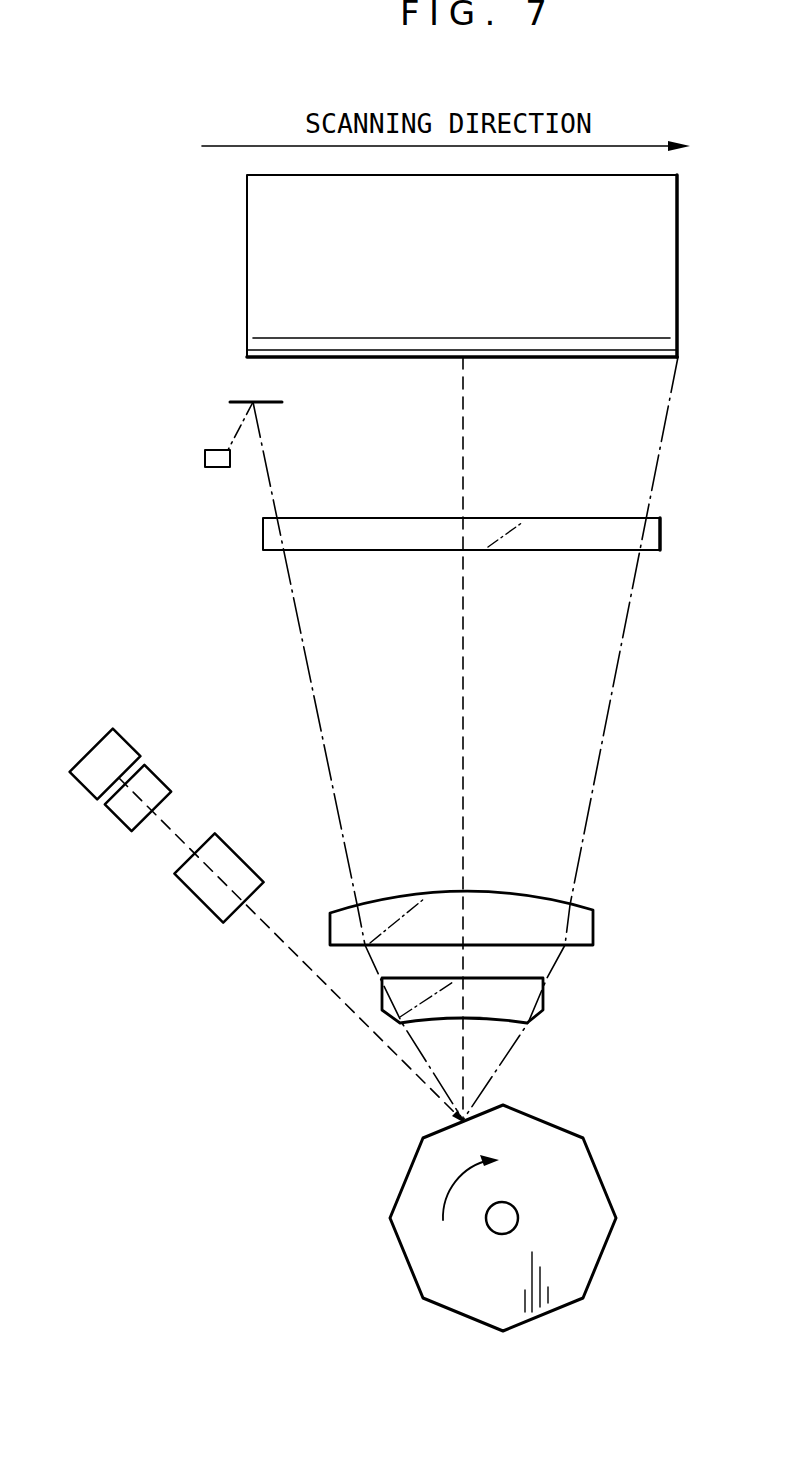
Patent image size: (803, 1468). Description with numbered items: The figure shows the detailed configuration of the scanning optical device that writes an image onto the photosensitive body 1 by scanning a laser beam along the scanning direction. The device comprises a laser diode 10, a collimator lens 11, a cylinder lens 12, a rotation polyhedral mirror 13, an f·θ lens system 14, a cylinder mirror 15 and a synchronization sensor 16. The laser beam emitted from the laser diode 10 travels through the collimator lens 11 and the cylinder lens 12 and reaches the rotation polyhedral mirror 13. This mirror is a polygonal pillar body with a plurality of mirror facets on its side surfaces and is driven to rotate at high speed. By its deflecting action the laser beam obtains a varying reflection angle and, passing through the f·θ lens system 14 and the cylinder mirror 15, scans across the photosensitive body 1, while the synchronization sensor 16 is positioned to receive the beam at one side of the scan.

The photosensitive body 1 is at (677, 249).
The laser diode 10 is at (88, 748).
The collimator lens 11 is at (160, 775).
The cylinder lens 12 is at (238, 853).
The rotation polyhedral mirror 13 is at (617, 1218).
The f·θ lens system 14 is at (622, 888).
The cylinder mirror 15 is at (660, 535).
The synchronization sensor 16 is at (217, 467).